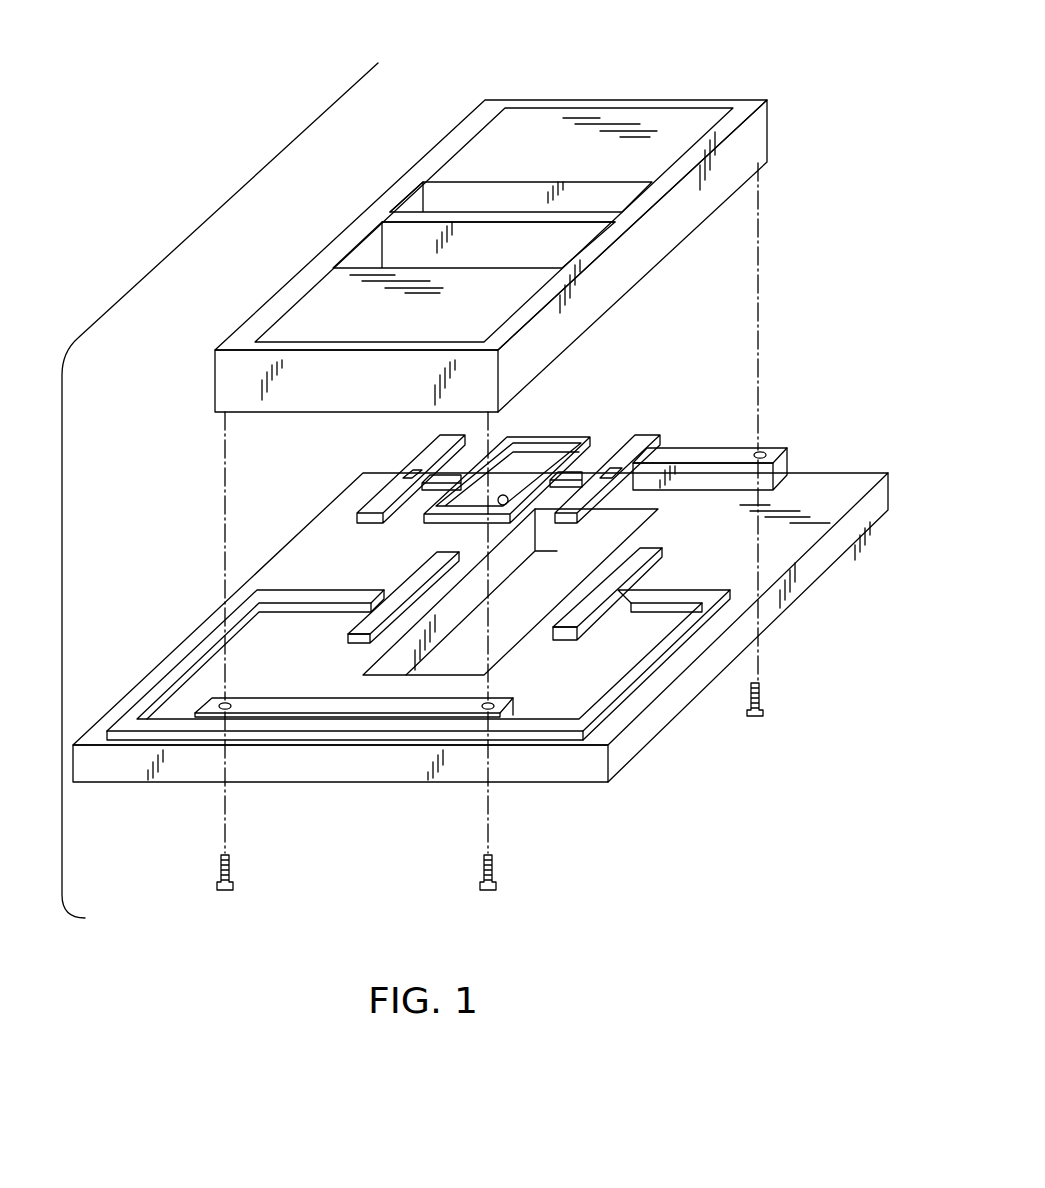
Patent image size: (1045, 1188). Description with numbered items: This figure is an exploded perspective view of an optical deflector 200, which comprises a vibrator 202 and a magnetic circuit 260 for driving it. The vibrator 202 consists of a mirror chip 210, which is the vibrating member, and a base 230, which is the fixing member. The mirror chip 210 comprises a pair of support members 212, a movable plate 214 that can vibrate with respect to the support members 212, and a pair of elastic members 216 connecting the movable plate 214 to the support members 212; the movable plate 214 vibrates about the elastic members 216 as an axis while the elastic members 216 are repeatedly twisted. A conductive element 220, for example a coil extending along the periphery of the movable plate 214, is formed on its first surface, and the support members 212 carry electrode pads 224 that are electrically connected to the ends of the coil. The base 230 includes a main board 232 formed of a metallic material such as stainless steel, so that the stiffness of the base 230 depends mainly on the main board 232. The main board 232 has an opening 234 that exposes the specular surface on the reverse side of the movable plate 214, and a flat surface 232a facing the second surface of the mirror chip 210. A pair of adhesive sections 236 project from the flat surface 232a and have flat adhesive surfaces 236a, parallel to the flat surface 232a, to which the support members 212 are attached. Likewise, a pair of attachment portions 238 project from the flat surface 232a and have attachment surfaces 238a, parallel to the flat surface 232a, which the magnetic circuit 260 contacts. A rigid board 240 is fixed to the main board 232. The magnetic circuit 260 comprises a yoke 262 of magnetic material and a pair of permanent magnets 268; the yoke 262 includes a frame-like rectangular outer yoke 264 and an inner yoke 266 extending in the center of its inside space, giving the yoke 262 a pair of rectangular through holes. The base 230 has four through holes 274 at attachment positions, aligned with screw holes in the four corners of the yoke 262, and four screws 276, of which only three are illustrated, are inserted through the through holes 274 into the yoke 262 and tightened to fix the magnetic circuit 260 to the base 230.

The optical deflector 200 is at (190, 200).
The vibrator 202 is at (787, 312).
The mirror chip 210 is at (518, 473).
The support members 212 is at (437, 447).
The movable plate 214 is at (537, 440).
The elastic members 216 is at (433, 490).
The conductive element 220 is at (508, 505).
The electrode pads 224 is at (403, 473).
The base 230 is at (484, 605).
The main board 232 is at (484, 604).
The flat surface 232a is at (862, 483).
The opening 234 is at (492, 653).
The adhesive sections 236 is at (499, 583).
The adhesive surfaces 236a is at (410, 588).
The attachment portions 238 is at (518, 605).
The attachment surfaces 238a is at (330, 705).
The rigid board 240 is at (288, 736).
The magnetic circuit 260 is at (524, 216).
The yoke 262 is at (770, 134).
The outer yoke 264 is at (673, 180).
The inner yoke 266 is at (415, 212).
The permanent magnets 268 is at (561, 118).
The through holes 274 is at (233, 700).
The screws 276 is at (236, 873).